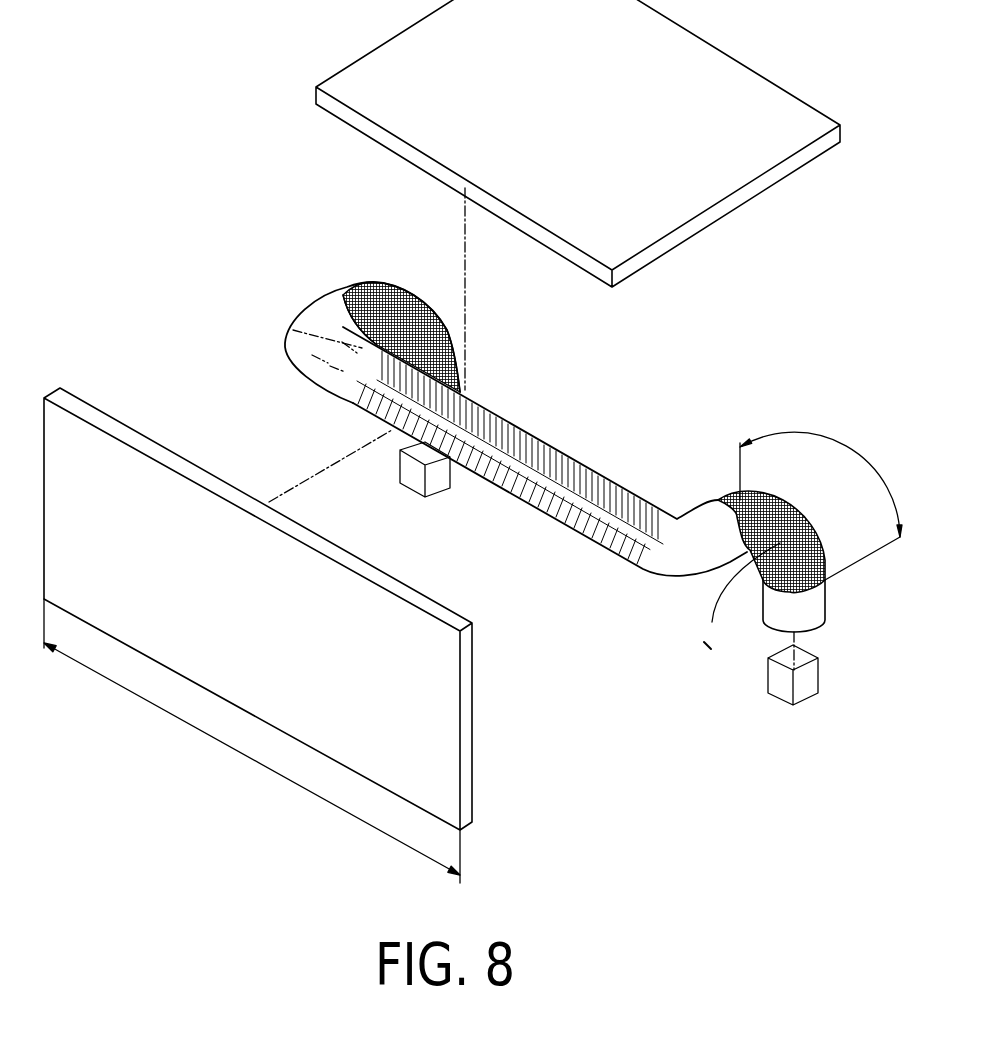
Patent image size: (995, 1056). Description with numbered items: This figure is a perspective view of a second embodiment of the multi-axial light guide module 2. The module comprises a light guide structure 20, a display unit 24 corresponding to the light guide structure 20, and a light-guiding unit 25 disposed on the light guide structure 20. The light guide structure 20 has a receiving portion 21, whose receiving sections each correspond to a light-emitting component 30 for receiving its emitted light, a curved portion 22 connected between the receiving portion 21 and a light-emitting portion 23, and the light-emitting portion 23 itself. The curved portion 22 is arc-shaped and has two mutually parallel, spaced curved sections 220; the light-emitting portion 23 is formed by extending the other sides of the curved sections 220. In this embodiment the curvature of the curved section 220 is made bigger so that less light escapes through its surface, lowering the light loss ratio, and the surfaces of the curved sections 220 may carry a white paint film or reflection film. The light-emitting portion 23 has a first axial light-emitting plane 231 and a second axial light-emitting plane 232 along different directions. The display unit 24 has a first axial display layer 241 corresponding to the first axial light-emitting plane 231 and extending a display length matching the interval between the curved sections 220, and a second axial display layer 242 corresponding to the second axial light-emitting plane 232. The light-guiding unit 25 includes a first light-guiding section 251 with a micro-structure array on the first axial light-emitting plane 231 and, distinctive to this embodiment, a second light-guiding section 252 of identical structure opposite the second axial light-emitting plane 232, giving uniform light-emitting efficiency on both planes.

The light guide module 2 is at (126, 26).
The light guide structure 20 is at (562, 433).
The receiving portion 21 is at (827, 600).
The curved portion 22 is at (747, 352).
The curved section 220 is at (417, 310).
The light-emitting portion 23 is at (513, 457).
The first axial light-emitting plane 231 is at (293, 327).
The second axial light-emitting plane 232 is at (330, 366).
The display unit 24 is at (442, 441).
The first axial display layer 241 is at (352, 94).
The second axial display layer 242 is at (80, 407).
The light-guiding unit 25 is at (525, 507).
The first light-guiding section 251 is at (567, 525).
The second light-guiding section 252 is at (623, 490).
The light-emitting component 30 is at (435, 478).